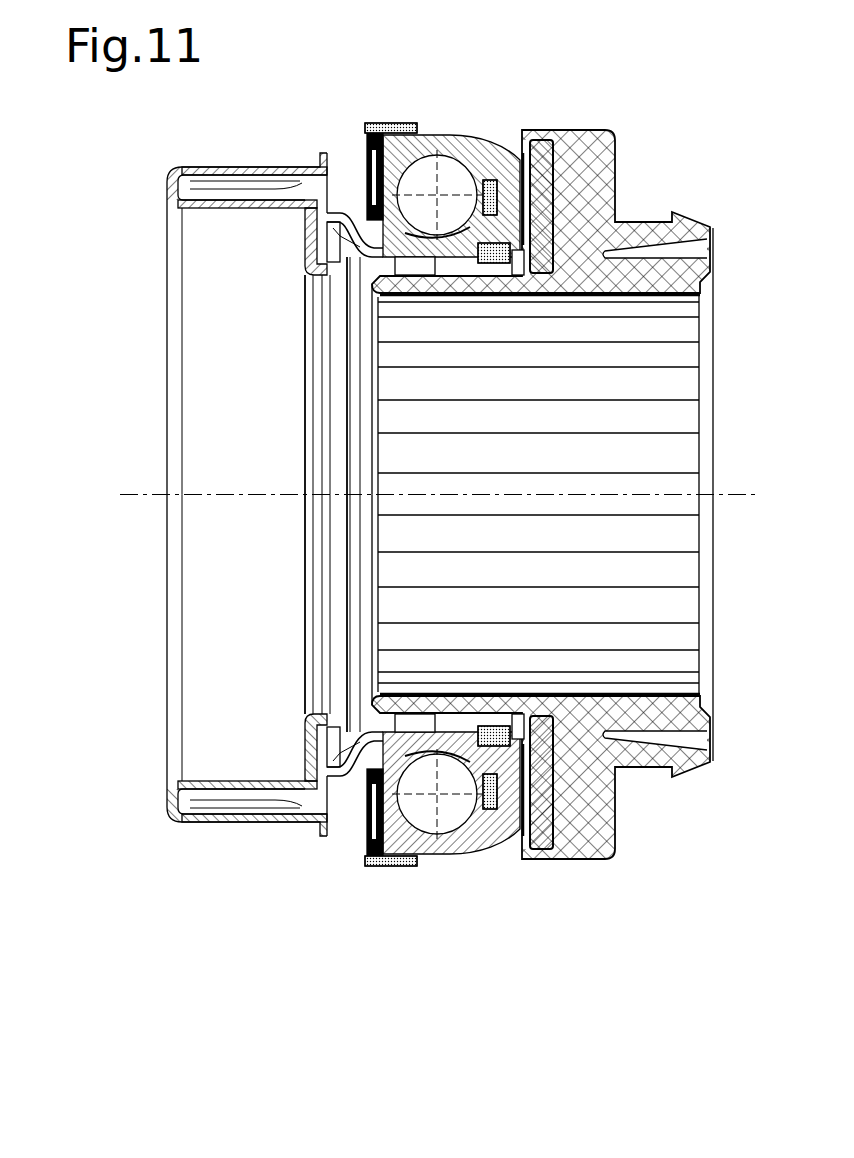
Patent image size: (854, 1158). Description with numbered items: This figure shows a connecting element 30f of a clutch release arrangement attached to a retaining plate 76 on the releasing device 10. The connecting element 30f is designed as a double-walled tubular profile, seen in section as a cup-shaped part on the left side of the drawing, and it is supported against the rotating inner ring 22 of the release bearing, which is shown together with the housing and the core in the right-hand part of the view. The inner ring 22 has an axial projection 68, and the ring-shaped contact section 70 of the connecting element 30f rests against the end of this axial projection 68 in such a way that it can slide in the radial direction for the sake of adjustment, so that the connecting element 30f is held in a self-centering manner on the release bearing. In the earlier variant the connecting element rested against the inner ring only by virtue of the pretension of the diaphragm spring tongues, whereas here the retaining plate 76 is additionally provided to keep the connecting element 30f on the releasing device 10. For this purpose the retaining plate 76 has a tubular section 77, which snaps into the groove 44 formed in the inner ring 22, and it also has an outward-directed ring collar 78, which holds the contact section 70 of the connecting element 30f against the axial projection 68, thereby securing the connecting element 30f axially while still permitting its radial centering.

The releasing device 10 is at (327, 878).
The inner ring 22 is at (357, 215).
The connecting element 30f is at (134, 202).
The groove 44 is at (360, 265).
The axial projection 68 is at (342, 220).
The contact section 70 is at (305, 748).
The retaining plate 76 is at (318, 268).
The tubular section 77 is at (362, 738).
The ring collar 78 is at (305, 243).